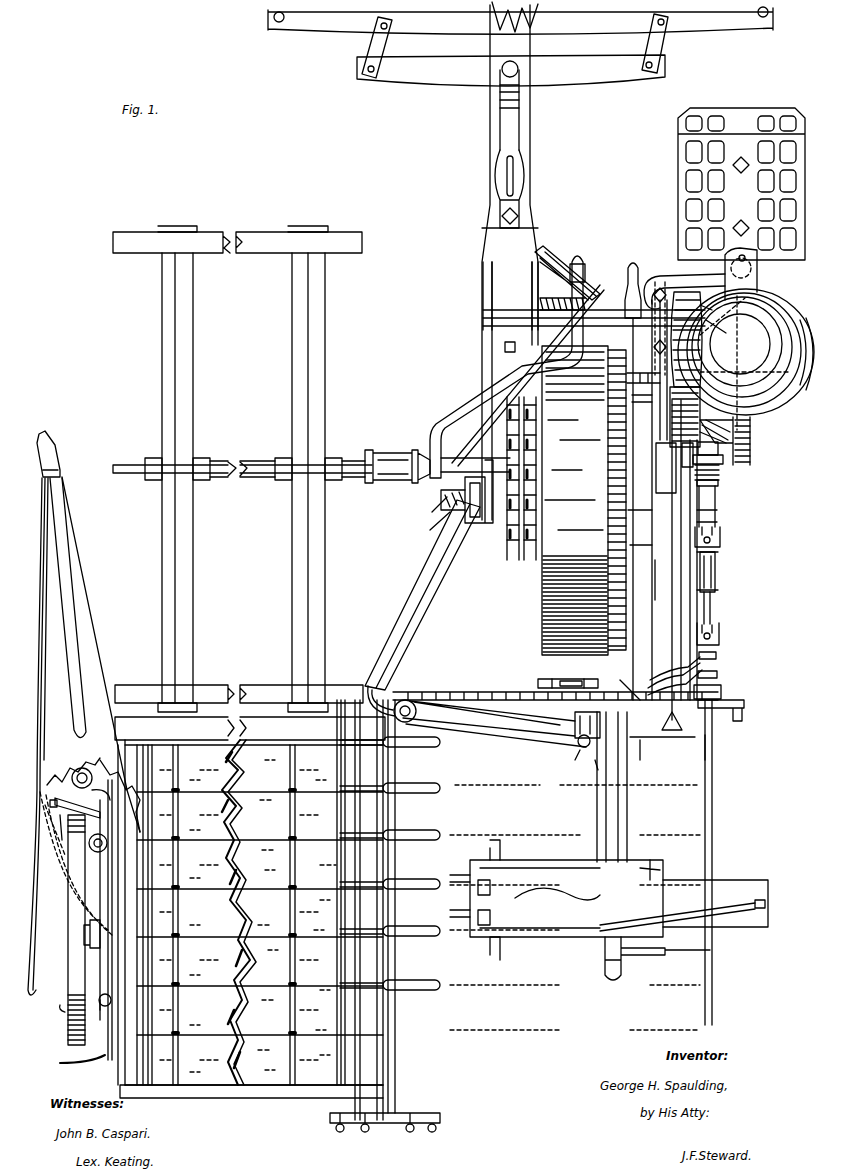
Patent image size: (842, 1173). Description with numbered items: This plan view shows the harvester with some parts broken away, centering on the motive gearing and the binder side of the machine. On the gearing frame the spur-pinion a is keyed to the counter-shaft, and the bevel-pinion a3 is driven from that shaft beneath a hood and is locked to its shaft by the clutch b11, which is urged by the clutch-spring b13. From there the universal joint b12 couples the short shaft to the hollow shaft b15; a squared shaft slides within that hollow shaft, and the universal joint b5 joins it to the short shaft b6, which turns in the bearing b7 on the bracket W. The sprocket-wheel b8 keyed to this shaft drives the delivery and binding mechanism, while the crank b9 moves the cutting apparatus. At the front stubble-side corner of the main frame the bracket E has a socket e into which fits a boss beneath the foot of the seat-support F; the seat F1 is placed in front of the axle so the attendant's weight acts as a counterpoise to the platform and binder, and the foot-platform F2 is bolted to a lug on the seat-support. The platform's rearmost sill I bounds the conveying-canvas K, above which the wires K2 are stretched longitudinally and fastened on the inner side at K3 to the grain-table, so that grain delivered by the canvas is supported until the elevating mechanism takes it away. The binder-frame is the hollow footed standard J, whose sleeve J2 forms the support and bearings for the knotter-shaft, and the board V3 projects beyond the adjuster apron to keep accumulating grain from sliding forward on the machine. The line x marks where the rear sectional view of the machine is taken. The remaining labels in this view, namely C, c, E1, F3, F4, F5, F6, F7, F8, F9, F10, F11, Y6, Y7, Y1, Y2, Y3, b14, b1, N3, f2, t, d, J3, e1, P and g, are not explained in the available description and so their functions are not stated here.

The casing C is at (495, 358).
The lever c is at (625, 481).
The spur-pinion a is at (628, 373).
The bevel-pinion a3 is at (716, 471).
The bracket E is at (684, 285).
The casing E1 is at (741, 274).
The socket e is at (748, 257).
The seat-support F is at (584, 500).
The seat F1 is at (746, 359).
The foot-platform F2 is at (741, 184).
The pawl F3 is at (640, 522).
The link F4 is at (425, 526).
The bent rod F5 is at (507, 367).
The pawl box F6 is at (663, 467).
The link F7 is at (430, 509).
The bar F8 is at (641, 406).
The diagonal arm F9 is at (422, 595).
The rod F10 is at (658, 583).
The bar F11 is at (641, 555).
The cam Y6 is at (711, 308).
The cam Y7 is at (719, 330).
The clutch b11 is at (725, 459).
The clutch-spring b13 is at (720, 483).
The universal joint b12 is at (722, 542).
The hollow shaft b15 is at (716, 572).
The rod b14 is at (712, 608).
The universal joint b5 is at (720, 644).
The short shaft b6 is at (716, 659).
The bearing b7 is at (718, 676).
The sprocket-wheel b8 is at (722, 692).
The crank b9 is at (733, 714).
The hinge hook b1 is at (400, 690).
The pivot roller N3 is at (416, 716).
The section line x is at (555, 686).
The block f2 is at (568, 676).
The plate t is at (571, 675).
The link d is at (630, 683).
The bracket W is at (667, 675).
The footed standard J is at (577, 722).
The sleeve J2 is at (600, 800).
The shaft sleeve J3 is at (625, 798).
The board V3 is at (664, 724).
The roller Y1 is at (568, 759).
The roller Y2 is at (585, 771).
The bar Y3 is at (650, 752).
The rod e1 is at (714, 747).
The tank P is at (581, 865).
The nozzle g is at (613, 980).
The conveying-canvas K is at (254, 910).
The wires K2 is at (258, 915).
The inner wire attachment K3 is at (390, 863).
The rearmost platform sill I is at (251, 1090).